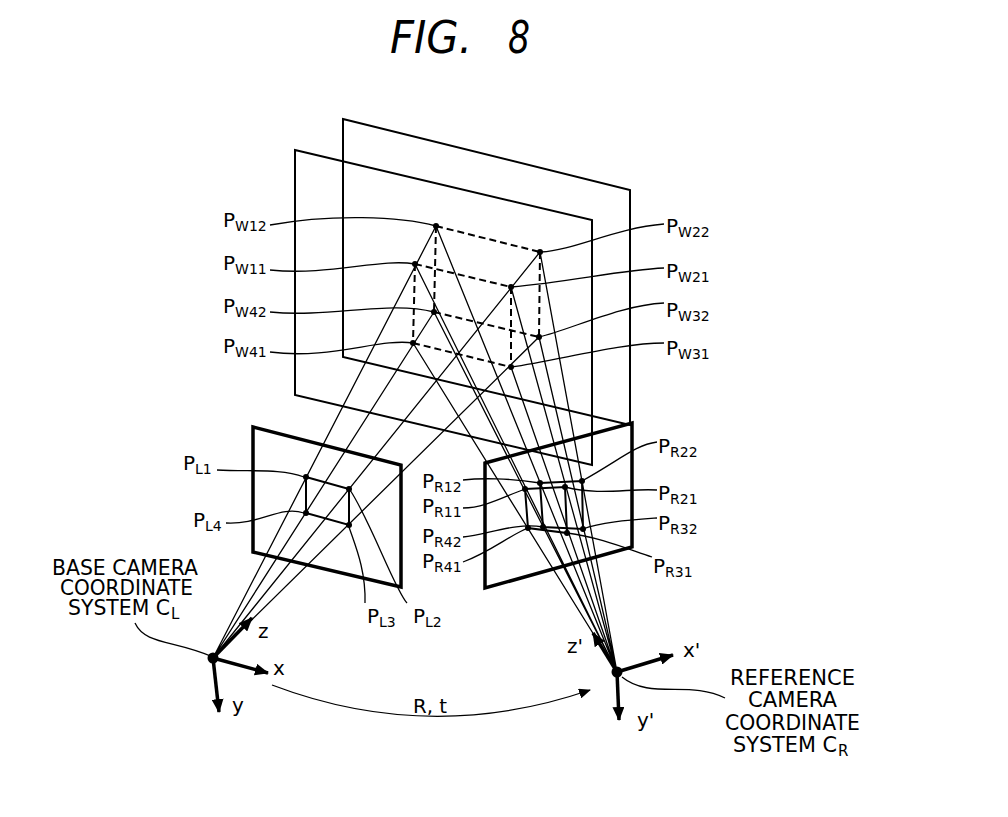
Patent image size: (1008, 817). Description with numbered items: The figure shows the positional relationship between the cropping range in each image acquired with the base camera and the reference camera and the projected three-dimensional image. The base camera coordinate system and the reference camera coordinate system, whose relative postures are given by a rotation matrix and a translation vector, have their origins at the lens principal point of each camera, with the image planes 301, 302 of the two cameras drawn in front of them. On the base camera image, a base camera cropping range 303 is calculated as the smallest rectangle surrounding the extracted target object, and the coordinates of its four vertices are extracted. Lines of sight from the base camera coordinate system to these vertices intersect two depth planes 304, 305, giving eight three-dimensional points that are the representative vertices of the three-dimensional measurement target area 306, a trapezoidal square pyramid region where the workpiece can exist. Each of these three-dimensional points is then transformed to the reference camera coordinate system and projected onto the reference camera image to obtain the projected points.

The base camera image plane 301 is at (253, 497).
The reference camera image plane 302 is at (632, 470).
The base camera cropping range 303 is at (336, 523).
The plane 304 is at (483, 194).
The plane 305 is at (470, 150).
The three-dimensional measurement target area 306 is at (483, 253).